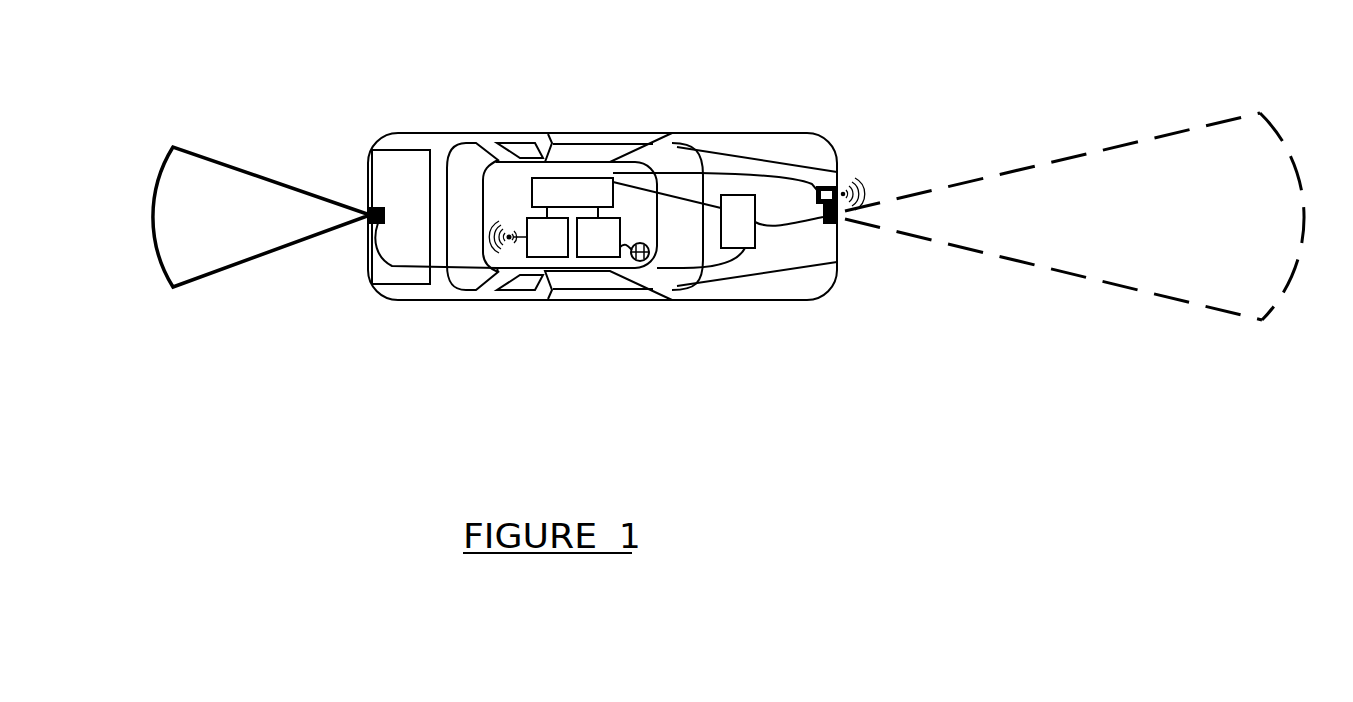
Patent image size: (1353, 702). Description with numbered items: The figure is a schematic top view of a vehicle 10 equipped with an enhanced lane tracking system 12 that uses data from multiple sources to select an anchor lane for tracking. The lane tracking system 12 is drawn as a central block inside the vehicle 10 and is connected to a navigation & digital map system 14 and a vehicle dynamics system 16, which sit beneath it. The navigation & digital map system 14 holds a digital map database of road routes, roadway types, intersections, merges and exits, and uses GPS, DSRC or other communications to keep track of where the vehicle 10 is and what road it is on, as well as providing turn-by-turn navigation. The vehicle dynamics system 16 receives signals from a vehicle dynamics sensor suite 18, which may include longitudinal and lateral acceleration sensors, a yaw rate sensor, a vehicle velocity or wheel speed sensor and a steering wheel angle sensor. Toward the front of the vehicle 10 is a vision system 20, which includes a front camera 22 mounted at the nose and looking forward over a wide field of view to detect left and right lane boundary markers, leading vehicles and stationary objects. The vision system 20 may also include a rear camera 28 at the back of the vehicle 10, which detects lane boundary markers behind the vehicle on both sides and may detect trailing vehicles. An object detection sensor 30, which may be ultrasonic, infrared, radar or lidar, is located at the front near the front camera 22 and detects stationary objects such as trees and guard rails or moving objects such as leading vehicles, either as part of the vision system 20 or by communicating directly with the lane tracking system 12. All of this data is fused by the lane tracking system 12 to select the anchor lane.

The vehicle 10 is at (442, 133).
The lane tracking system 12 is at (674, 195).
The navigation & digital map system 14 is at (528, 237).
The vehicle dynamics system 16 is at (604, 237).
The vehicle dynamics sensor suite 18 is at (650, 249).
The vision system 20 is at (772, 221).
The front camera 22 is at (836, 222).
The rear camera 28 is at (374, 209).
The object detection sensor 30 is at (842, 186).